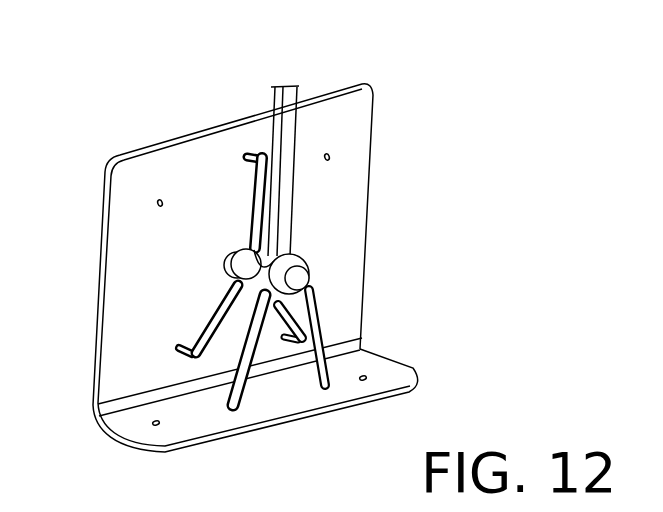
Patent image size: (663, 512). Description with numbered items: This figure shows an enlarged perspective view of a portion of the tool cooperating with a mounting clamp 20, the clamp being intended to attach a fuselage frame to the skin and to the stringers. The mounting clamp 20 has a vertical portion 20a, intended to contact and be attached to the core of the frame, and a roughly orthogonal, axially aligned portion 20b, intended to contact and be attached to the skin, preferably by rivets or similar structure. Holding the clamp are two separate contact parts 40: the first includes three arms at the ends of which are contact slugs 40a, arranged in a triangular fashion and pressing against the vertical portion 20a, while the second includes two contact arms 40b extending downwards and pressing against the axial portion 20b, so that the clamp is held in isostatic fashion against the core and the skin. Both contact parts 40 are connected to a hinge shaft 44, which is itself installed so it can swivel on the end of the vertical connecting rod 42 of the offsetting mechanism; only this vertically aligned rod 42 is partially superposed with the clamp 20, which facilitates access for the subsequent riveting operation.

The mounting clamp 20 is at (261, 268).
The vertical portion 20a is at (133, 213).
The axial portion 20b is at (387, 373).
The contact part 40 is at (233, 271).
The contact slugs 40a is at (253, 149).
The contact arms 40b is at (322, 332).
The connecting rod 42 is at (290, 147).
The hinge shaft 44 is at (260, 290).